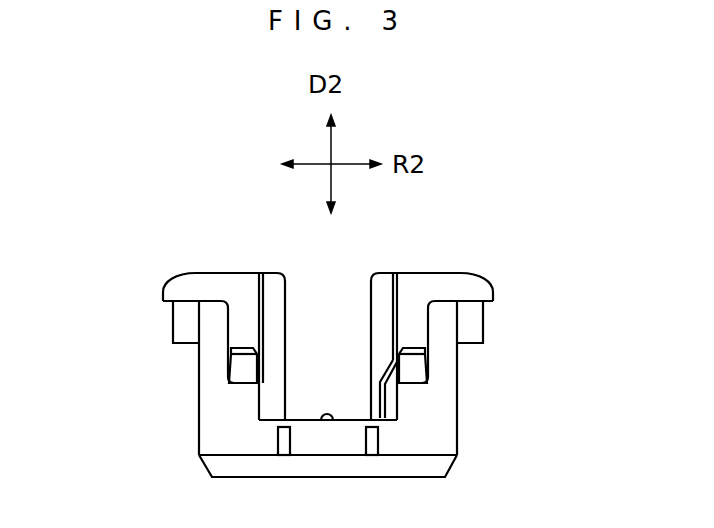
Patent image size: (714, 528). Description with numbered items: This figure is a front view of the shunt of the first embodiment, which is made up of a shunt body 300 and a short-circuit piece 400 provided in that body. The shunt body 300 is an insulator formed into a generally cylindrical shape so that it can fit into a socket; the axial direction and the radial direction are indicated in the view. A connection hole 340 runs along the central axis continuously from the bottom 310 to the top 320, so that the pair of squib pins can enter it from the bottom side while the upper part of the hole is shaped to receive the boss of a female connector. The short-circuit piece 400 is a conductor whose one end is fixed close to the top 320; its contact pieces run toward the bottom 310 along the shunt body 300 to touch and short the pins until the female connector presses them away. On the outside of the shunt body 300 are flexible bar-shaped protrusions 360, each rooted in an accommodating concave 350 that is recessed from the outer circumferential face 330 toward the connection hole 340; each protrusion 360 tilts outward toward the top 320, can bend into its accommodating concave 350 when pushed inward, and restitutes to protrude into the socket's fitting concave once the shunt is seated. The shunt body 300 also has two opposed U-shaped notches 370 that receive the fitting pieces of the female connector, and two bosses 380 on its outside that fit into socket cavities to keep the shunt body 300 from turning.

The shunt body 300 is at (104, 172).
The bottom 310 is at (413, 477).
The top 320 is at (448, 272).
The outer circumferential face 330 is at (437, 425).
The connection hole 340 is at (285, 347).
The accommodating concave 350 is at (247, 338).
The protrusion 360 is at (243, 372).
The U-shaped notch 370 is at (328, 412).
The boss 380 is at (183, 325).
The short-circuit piece 400 is at (372, 402).